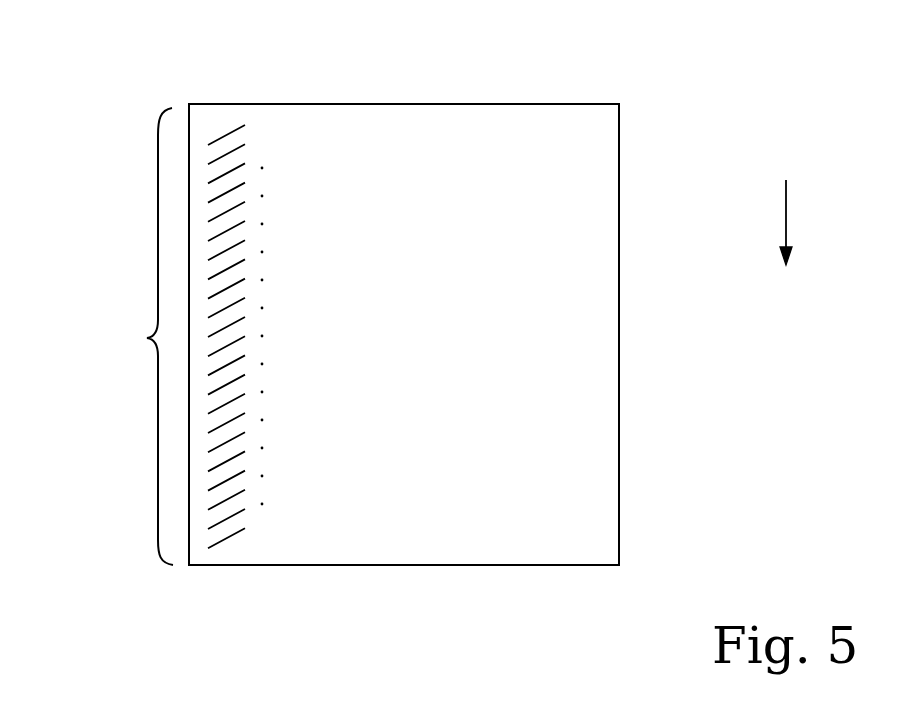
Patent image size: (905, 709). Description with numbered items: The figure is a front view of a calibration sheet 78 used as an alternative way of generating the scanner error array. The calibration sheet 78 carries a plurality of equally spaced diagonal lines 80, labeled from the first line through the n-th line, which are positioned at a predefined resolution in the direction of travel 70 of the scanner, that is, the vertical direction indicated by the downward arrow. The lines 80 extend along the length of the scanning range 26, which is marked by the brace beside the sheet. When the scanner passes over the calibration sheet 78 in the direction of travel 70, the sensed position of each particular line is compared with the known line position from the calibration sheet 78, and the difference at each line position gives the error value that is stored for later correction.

The scanning range 26 is at (147, 338).
The direction of travel 70 is at (786, 220).
The calibration sheet 78 is at (619, 217).
The plurality of equally spaced diagonal lines 80 is at (231, 73).